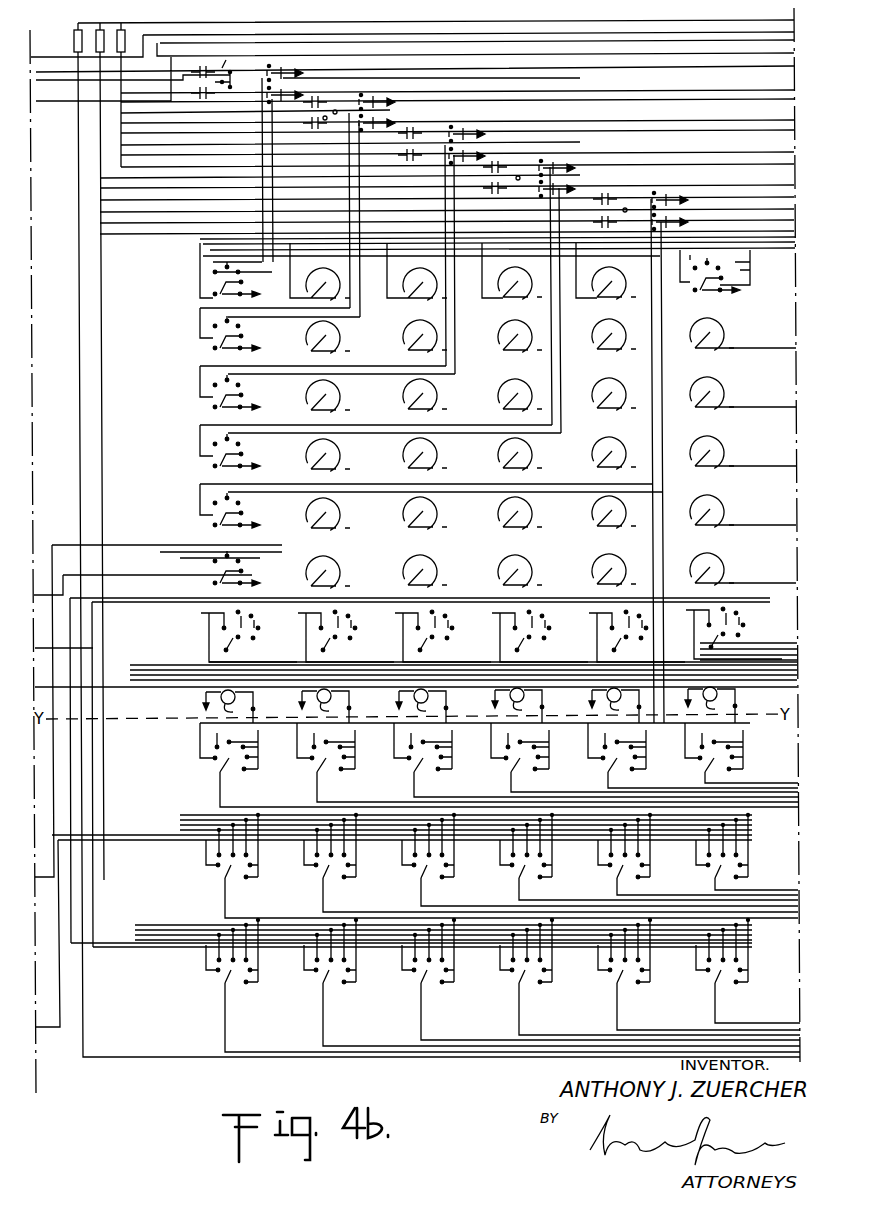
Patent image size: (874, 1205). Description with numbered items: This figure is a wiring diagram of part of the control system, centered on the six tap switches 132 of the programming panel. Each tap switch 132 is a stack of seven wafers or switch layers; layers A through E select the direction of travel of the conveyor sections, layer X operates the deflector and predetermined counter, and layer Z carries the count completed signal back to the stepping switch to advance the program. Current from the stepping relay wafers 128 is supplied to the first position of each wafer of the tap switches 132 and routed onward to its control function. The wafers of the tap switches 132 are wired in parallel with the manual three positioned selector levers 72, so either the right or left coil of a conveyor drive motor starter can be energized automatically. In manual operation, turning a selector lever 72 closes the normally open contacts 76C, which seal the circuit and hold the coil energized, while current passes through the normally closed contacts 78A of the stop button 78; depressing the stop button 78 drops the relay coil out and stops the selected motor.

The holding contacts 76C is at (203, 66).
The three positioned selector lever 72 is at (219, 72).
The stop button 78 is at (307, 72).
The normally closed contacts 78A is at (296, 78).
The tap switches 132 is at (415, 465).
The stepping relay wafers 128 is at (426, 534).